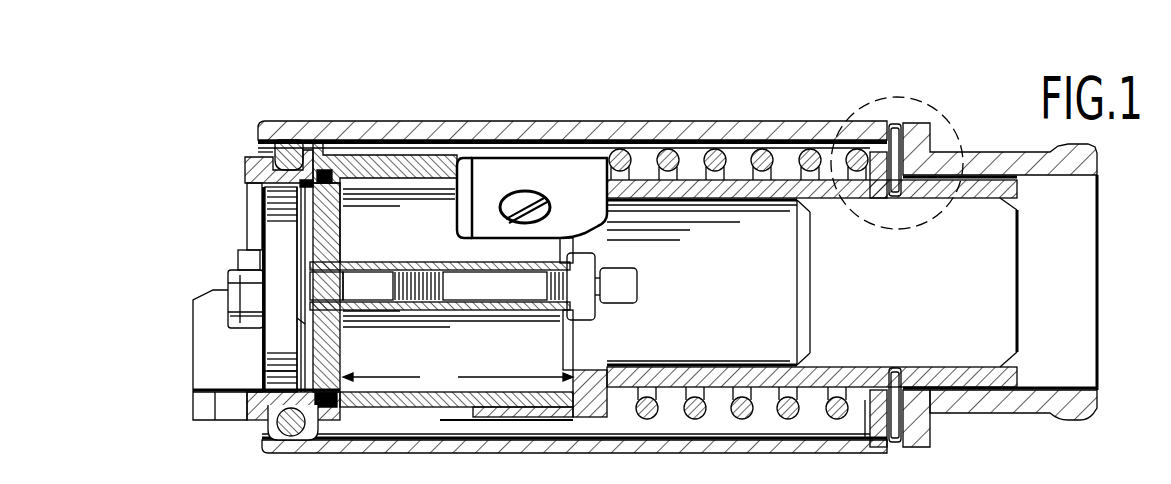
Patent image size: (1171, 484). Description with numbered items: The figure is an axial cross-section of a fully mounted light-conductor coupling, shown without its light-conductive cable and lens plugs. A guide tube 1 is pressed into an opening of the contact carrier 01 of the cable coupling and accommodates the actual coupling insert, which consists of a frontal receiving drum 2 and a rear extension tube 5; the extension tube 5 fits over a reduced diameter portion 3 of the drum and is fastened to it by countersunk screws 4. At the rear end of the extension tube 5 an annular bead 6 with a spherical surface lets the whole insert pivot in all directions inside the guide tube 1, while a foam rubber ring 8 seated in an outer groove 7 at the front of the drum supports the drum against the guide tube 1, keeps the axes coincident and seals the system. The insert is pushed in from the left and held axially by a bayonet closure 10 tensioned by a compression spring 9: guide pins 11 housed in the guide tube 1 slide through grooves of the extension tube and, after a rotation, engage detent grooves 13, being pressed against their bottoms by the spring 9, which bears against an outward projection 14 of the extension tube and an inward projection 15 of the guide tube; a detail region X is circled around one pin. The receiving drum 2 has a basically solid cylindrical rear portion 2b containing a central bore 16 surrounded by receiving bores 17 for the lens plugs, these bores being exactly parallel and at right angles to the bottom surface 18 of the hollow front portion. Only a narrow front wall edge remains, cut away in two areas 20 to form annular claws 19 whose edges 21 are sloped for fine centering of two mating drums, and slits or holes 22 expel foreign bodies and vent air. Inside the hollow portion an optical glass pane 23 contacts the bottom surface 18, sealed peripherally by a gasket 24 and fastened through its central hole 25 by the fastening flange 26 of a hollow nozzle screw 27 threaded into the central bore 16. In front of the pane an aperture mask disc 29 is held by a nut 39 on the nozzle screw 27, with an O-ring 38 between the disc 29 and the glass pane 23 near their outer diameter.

The contact carrier 01 is at (534, 120).
The guide tube 1 is at (638, 133).
The receiving drum 2 is at (403, 160).
The solid cylindrical rear portion 2b is at (458, 377).
The reduced diameter portion 3 is at (518, 417).
The countersunk screws 4 is at (512, 203).
The rear extension tube 5 is at (688, 188).
The annular bead 6 is at (1000, 285).
The outer groove 7 is at (313, 158).
The foam rubber ring 8 is at (278, 418).
The compression spring 9 is at (760, 157).
The bayonet closure 10 is at (906, 342).
The guide pins 11 is at (890, 143).
The detent grooves 13 is at (805, 355).
The outward projection 14 is at (612, 413).
The inward projection 15 is at (863, 413).
The central bore 16 is at (466, 263).
The receiving bores 17 is at (432, 258).
The bottom surface 18 is at (340, 185).
The annular claws 19 is at (205, 349).
The cut-away areas 20 is at (223, 243).
The edges of the annular claws 21 is at (213, 291).
The slits or holes 22 is at (255, 214).
The optical glass pane 23 is at (342, 351).
The gasket 24 is at (325, 168).
The central hole 25 is at (340, 256).
The fastening flange 26 is at (305, 321).
The hollow nozzle screw 27 is at (360, 318).
The aperture mask disc 29 is at (263, 371).
The O-ring 38 is at (320, 433).
The nut 39 is at (240, 313).
The detail region X is at (940, 103).